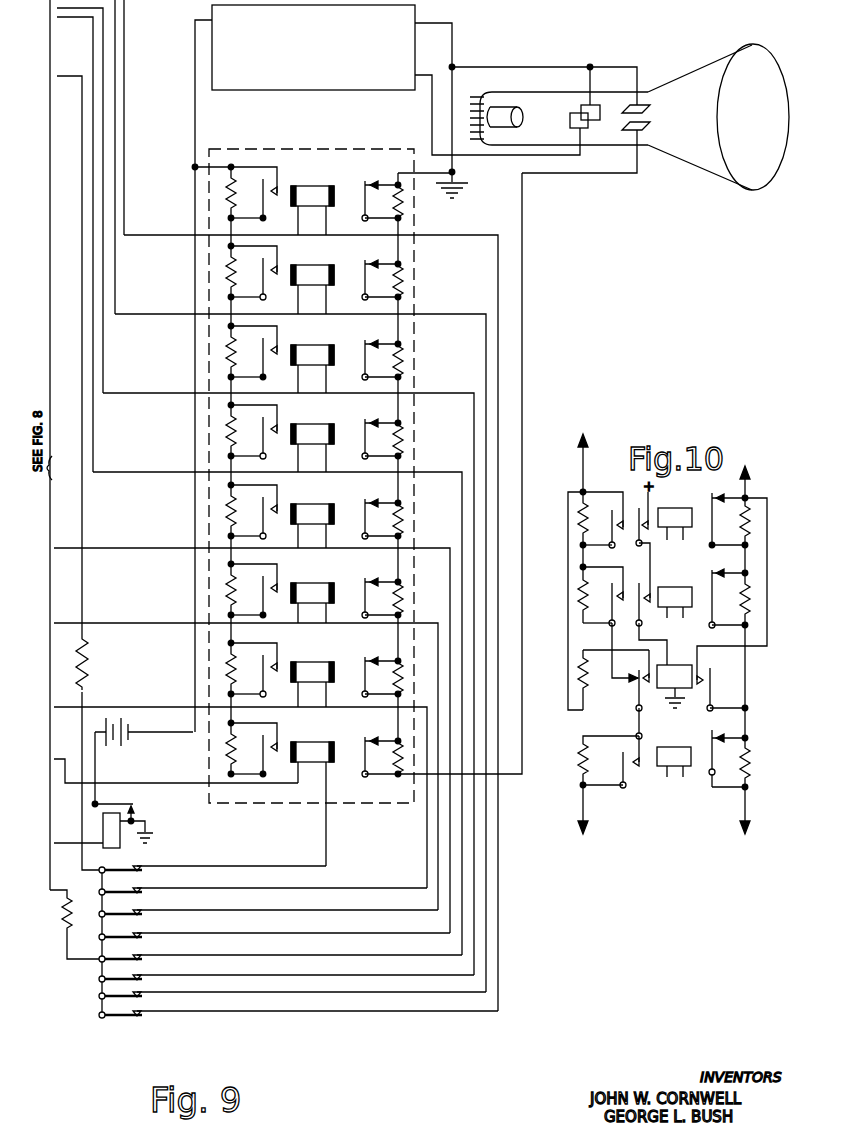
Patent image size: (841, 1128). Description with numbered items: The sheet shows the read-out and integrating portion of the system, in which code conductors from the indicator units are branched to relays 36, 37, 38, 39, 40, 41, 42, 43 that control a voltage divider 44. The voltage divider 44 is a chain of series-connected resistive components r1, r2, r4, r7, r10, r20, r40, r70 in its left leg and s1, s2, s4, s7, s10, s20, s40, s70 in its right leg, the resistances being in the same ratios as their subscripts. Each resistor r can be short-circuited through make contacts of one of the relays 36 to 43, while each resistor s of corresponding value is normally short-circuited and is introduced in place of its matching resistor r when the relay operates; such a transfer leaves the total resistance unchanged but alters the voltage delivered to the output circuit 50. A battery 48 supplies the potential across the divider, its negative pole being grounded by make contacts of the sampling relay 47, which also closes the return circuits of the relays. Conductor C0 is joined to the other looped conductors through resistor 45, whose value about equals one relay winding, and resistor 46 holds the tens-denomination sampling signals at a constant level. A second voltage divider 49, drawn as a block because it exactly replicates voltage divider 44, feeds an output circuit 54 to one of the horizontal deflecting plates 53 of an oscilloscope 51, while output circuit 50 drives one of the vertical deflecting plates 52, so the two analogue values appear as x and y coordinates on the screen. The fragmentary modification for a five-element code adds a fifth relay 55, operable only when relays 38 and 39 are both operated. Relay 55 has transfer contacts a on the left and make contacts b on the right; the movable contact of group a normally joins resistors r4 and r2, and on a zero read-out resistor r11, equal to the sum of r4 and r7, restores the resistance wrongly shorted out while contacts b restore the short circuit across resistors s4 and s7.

In FIG. 9, the relay 36 is at (330, 740).
In FIG. 9, the relay 37 is at (330, 660).
In FIG. 10, the relay 37 is at (674, 752).
In FIG. 9, the relay 38 is at (330, 581).
In FIG. 10, the relay 38 is at (675, 592).
In FIG. 9, the relay 39 is at (330, 502).
In FIG. 10, the relay 39 is at (675, 514).
In FIG. 9, the relay 40 is at (330, 422).
In FIG. 9, the relay 41 is at (330, 343).
In FIG. 9, the relay 42 is at (330, 263).
In FIG. 9, the relay 43 is at (330, 184).
In FIG. 9, the voltage divider 44 is at (221, 148).
In FIG. 9, the resistor 45 is at (98, 676).
In FIG. 9, the resistor 46 is at (86, 934).
In FIG. 9, the relay 47 is at (103, 842).
In FIG. 9, the battery 48 is at (136, 738).
In FIG. 9, the voltage divider 49 is at (293, 90).
In FIG. 9, the output circuit 50 is at (520, 756).
In FIG. 9, the oscilloscope 51 is at (710, 60).
In FIG. 9, the vertical deflecting plates 52 is at (648, 146).
In FIG. 9, the horizontal deflecting plates 53 is at (576, 113).
In FIG. 9, the output circuit 54 is at (432, 100).
In FIG. 10, the relay 55 is at (674, 677).
In FIG. 9, the resistive component r70 is at (229, 190).
In FIG. 9, the resistive component r40 is at (229, 269).
In FIG. 9, the resistive component r20 is at (229, 349).
In FIG. 9, the resistive component r10 is at (229, 428).
In FIG. 9, the resistive component r7 is at (251, 510).
In FIG. 10, the resistive component r7 is at (600, 520).
In FIG. 9, the resistive component r4 is at (251, 589).
In FIG. 10, the resistive component r4 is at (600, 596).
In FIG. 9, the resistive component r2 is at (251, 668).
In FIG. 10, the resistive component r2 is at (608, 762).
In FIG. 9, the resistive component r1 is at (251, 748).
In FIG. 10, the resistor r11 is at (613, 680).
In FIG. 9, the resistive component s70 is at (410, 204).
In FIG. 9, the resistive component s40 is at (410, 283).
In FIG. 9, the resistive component s20 is at (410, 363).
In FIG. 9, the resistive component s10 is at (410, 442).
In FIG. 9, the resistive component s7 is at (382, 519).
In FIG. 10, the resistive component s7 is at (729, 520).
In FIG. 9, the resistive component s4 is at (382, 598).
In FIG. 10, the resistive component s4 is at (729, 598).
In FIG. 9, the resistive component s2 is at (382, 677).
In FIG. 10, the resistive component s2 is at (729, 760).
In FIG. 9, the resistive component s1 is at (382, 757).
In FIG. 10, the transfer contacts a is at (632, 694).
In FIG. 10, the make contacts b is at (712, 699).